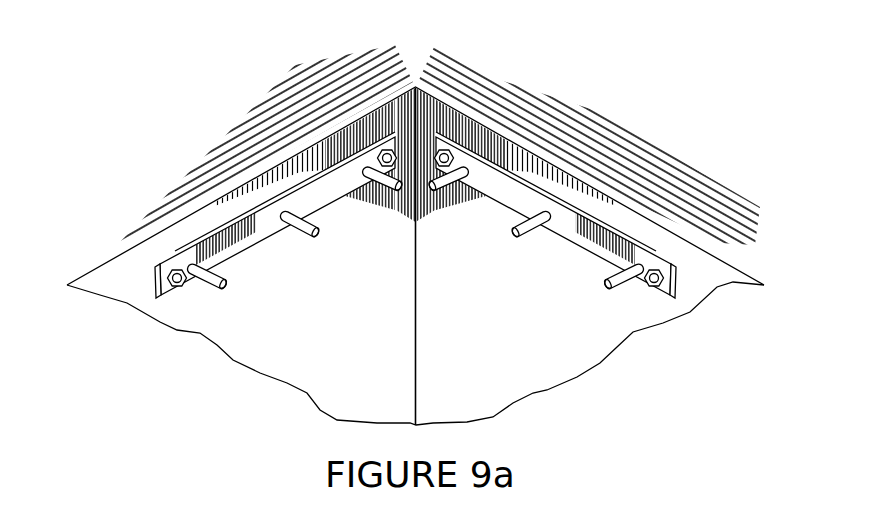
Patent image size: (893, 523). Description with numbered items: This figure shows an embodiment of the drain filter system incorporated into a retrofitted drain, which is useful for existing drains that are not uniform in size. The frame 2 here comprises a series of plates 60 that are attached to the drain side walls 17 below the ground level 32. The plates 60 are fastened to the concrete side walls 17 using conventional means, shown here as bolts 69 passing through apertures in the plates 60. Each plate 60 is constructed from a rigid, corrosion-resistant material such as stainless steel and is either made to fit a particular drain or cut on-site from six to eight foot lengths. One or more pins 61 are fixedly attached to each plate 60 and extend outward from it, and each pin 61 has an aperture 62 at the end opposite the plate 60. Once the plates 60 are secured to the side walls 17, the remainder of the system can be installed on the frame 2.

The frame 2 is at (672, 217).
The plate 60 is at (500, 108).
The ground level 32 is at (210, 154).
The drain side wall 17 is at (335, 358).
The bolt 69 is at (392, 150).
The aperture 62 is at (606, 276).
The pin 61 is at (458, 183).